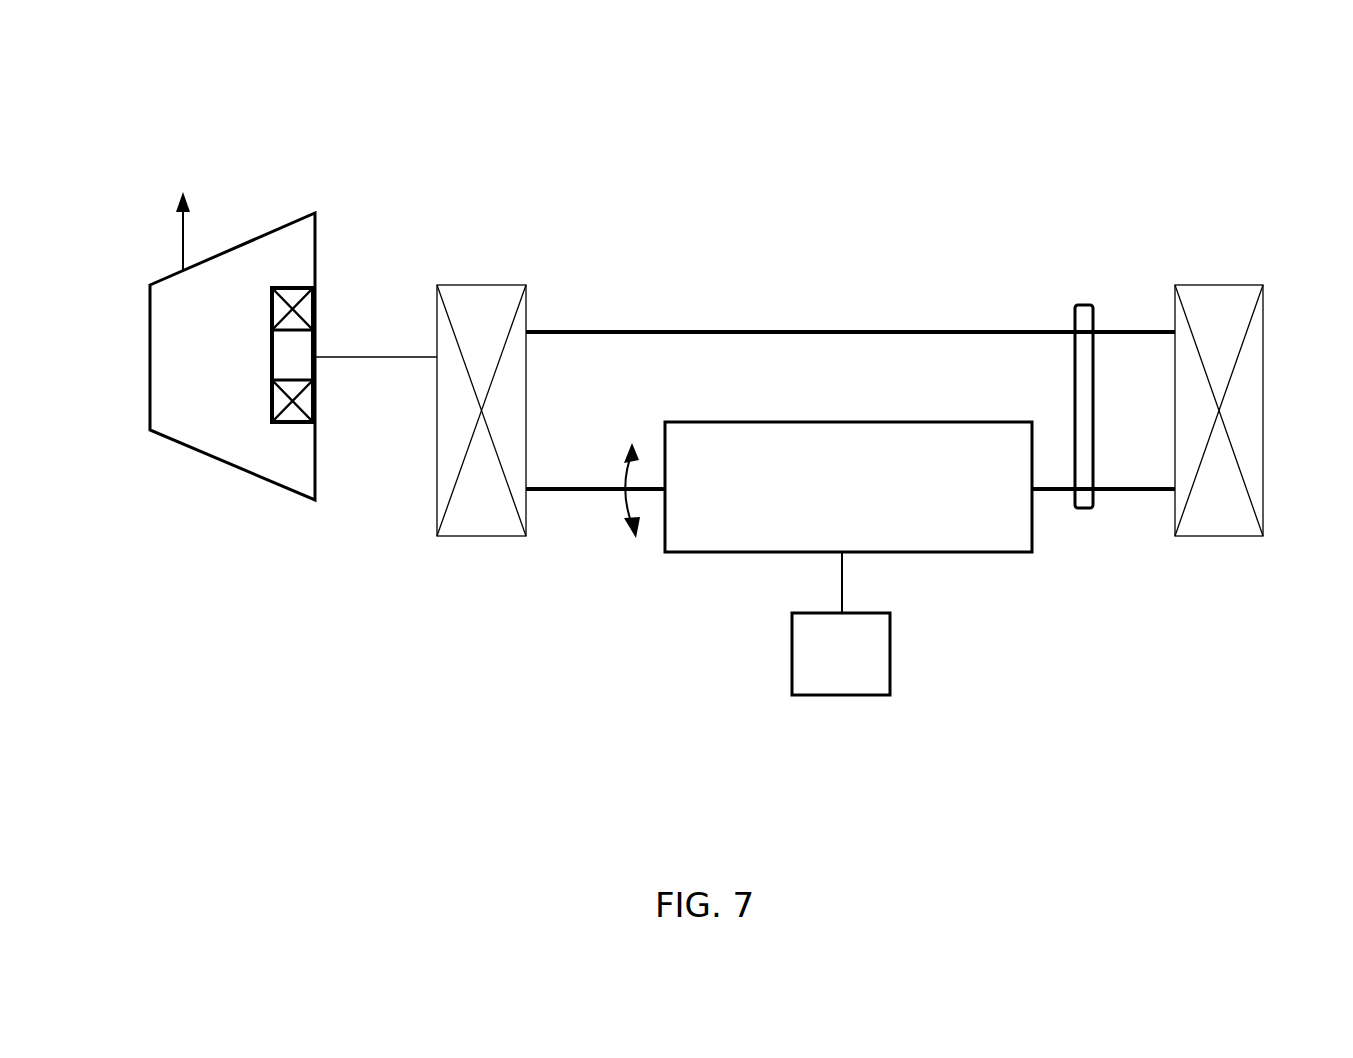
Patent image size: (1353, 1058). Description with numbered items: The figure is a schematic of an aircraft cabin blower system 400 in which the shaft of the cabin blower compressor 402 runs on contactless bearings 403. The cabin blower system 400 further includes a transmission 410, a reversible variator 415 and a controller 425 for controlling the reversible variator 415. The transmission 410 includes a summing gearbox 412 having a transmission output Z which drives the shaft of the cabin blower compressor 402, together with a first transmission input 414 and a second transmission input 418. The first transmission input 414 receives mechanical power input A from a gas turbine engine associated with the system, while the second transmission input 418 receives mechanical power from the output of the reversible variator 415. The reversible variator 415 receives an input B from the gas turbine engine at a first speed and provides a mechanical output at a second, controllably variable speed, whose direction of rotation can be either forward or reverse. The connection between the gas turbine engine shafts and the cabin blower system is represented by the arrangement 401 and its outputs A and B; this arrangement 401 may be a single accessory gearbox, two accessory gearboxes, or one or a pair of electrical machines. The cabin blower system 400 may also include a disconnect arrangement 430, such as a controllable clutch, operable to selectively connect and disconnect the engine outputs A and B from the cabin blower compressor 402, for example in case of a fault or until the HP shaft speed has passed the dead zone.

The cabin blower system 400 is at (928, 117).
The arrangement 401 is at (1225, 285).
The cabin blower compressor 402 is at (200, 452).
The contactless bearings 403 is at (283, 423).
The transmission 410 is at (547, 193).
The summing gearbox 412 is at (473, 536).
The first transmission input 414 is at (608, 332).
The reversible variator 415 is at (990, 552).
The second transmission input 418 is at (595, 489).
The controller 425 is at (790, 673).
The disconnect arrangement 430 is at (1085, 305).